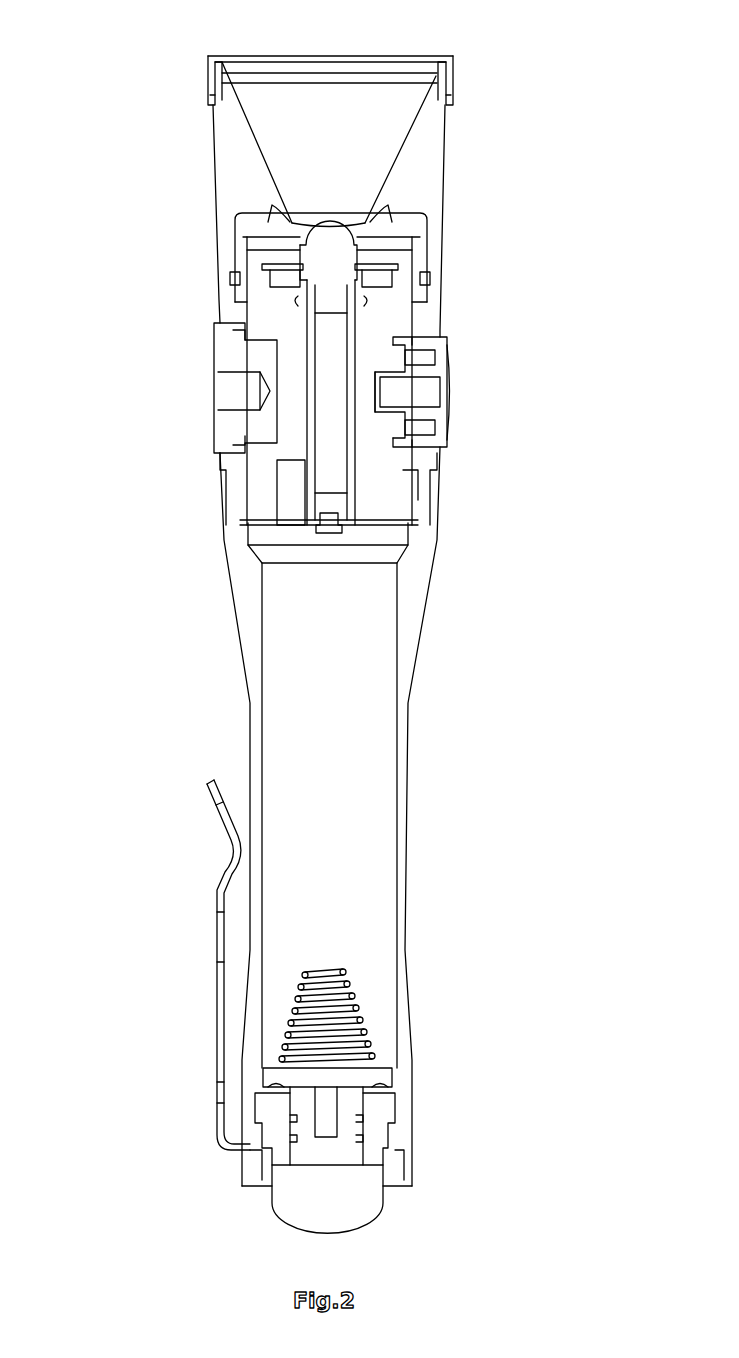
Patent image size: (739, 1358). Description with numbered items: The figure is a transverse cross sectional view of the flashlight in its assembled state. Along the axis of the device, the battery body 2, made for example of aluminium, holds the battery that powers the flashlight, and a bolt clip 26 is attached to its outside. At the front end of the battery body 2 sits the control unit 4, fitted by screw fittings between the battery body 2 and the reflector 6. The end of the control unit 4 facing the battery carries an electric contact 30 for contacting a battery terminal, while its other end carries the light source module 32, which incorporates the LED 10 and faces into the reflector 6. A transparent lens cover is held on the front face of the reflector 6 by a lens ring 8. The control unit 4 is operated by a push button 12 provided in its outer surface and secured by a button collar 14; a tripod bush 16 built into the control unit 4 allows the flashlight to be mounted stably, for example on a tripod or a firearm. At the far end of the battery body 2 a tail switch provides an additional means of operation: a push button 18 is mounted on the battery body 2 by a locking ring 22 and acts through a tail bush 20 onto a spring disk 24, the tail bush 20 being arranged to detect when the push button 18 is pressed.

The battery body 2 is at (413, 592).
The control unit 4 is at (232, 466).
The reflector 6 is at (427, 166).
The lens ring 8 is at (216, 63).
The LED 10 is at (332, 236).
The push button 12 is at (433, 395).
The button collar 14 is at (437, 337).
The tripod bush 16 is at (240, 360).
The push button 18 is at (352, 1212).
The tail bush 20 is at (385, 1130).
The locking ring 22 is at (247, 1172).
The spring disk 24 is at (272, 1080).
The bolt clip 26 is at (215, 915).
The electric contact 30 is at (330, 535).
The light source module 32 is at (407, 271).